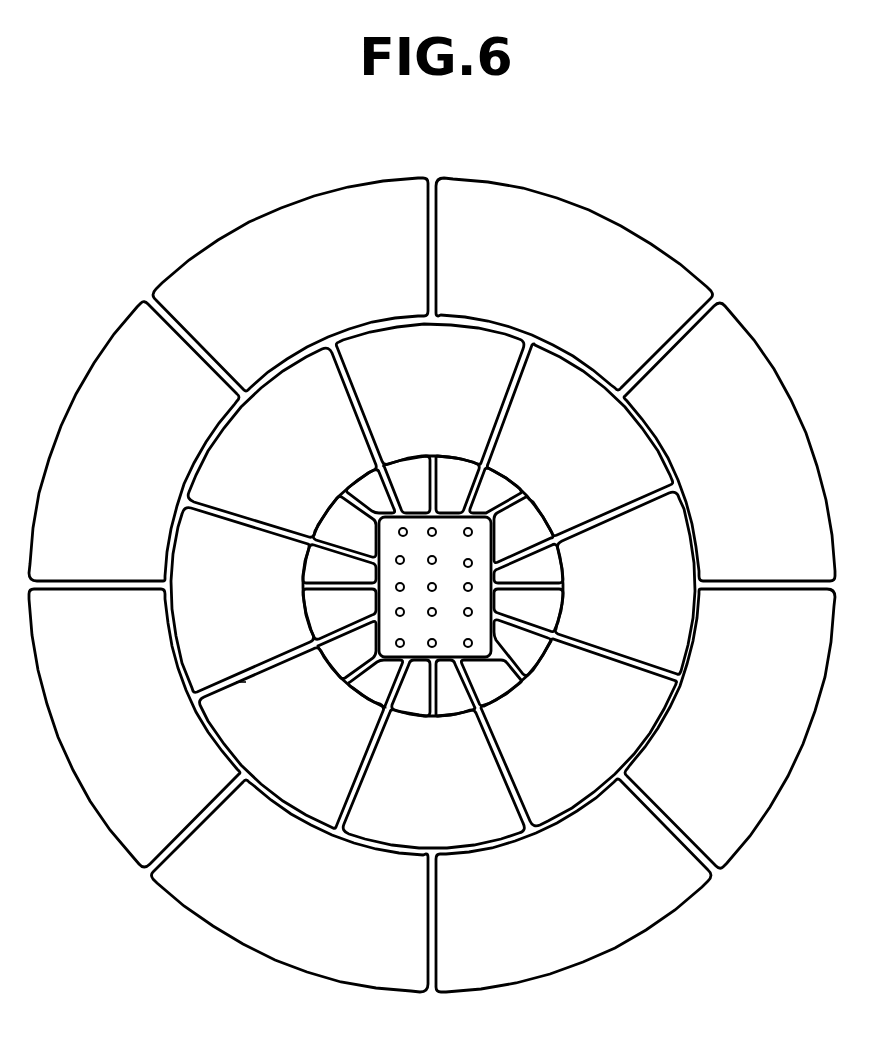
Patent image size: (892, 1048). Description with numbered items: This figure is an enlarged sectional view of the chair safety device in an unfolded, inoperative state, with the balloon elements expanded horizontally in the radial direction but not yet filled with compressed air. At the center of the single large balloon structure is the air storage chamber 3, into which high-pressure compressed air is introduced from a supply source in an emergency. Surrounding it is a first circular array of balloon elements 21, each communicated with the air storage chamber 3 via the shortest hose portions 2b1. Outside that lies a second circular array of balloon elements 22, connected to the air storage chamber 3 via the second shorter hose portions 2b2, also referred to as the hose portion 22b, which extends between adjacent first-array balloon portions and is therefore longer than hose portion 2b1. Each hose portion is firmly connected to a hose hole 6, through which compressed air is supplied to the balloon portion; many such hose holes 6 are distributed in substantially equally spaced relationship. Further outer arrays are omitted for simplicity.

The first circular array of balloon elements 21 is at (412, 407).
The second circular array of balloon elements 22 is at (267, 297).
The hose portion 22b is at (240, 684).
The hose portion 2b1 is at (444, 698).
The hose portion 2b2 is at (400, 690).
The air storage chamber 3 is at (492, 566).
The hose hole 6 is at (471, 531).